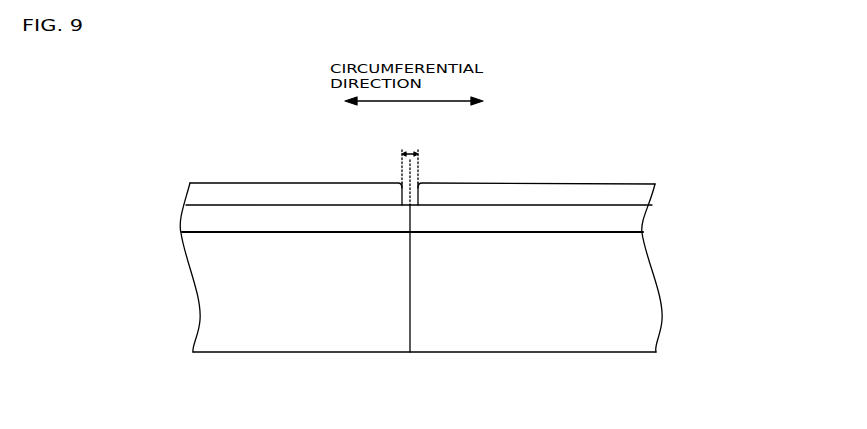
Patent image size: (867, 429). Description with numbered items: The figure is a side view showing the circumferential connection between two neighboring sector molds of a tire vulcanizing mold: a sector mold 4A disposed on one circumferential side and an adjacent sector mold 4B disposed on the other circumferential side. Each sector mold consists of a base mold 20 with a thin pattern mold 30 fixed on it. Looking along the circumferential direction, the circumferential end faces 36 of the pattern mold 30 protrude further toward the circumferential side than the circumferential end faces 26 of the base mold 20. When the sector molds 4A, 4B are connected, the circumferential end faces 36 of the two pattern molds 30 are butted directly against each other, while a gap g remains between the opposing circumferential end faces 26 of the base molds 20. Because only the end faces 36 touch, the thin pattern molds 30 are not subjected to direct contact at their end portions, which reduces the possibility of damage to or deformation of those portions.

The sector mold 4A is at (207, 173).
The sector mold 4B is at (635, 172).
The base mold 20 is at (292, 318).
The circumferential end faces 26 is at (402, 186).
The pattern mold 30 is at (288, 193).
The circumferential end faces 36 is at (410, 295).
The gap g is at (410, 145).